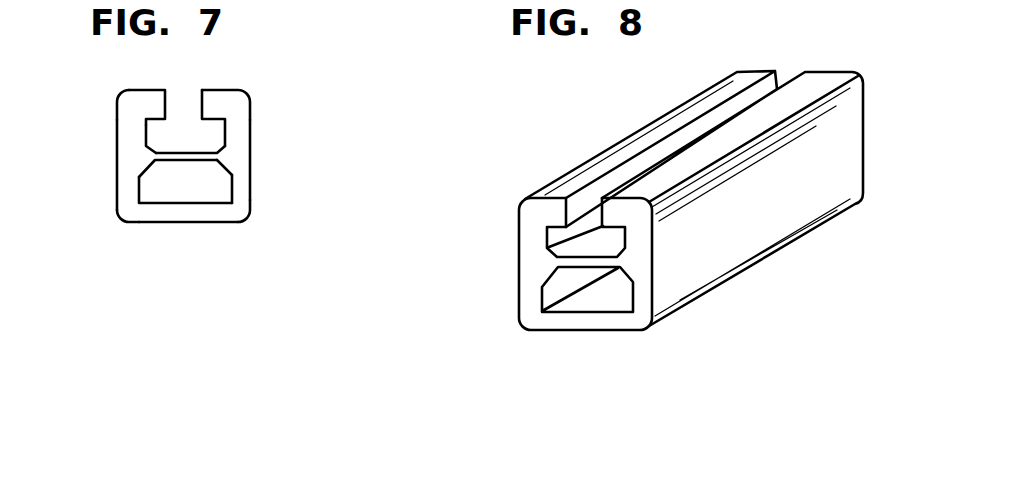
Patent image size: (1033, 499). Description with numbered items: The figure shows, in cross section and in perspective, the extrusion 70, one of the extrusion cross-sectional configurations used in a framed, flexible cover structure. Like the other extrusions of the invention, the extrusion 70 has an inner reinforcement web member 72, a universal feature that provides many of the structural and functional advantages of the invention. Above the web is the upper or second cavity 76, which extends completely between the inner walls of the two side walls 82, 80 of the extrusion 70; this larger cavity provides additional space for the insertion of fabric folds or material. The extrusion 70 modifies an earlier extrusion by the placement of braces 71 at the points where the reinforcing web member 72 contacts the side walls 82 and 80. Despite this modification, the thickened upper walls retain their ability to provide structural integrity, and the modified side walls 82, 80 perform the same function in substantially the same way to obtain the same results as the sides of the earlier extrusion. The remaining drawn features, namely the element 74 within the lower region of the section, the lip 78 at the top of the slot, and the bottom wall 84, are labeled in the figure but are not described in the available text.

In FIG. 7, the extrusion 70 is at (102, 99).
In FIG. 8, the extrusion 70 is at (568, 139).
In FIG. 7, the braces 71 is at (216, 153).
In FIG. 7, the inner reinforcement web member 72 is at (198, 158).
In FIG. 8, the inner reinforcement web member 72 is at (579, 265).
In FIG. 7, the lower chamber wall 74 is at (172, 189).
In FIG. 7, the upper or second cavity 76 is at (178, 132).
In FIG. 7, the lip 78 is at (169, 103).
In FIG. 7, the side wall 80 is at (240, 202).
In FIG. 7, the side wall 82 is at (133, 167).
In FIG. 7, the bottom wall 84 is at (190, 210).